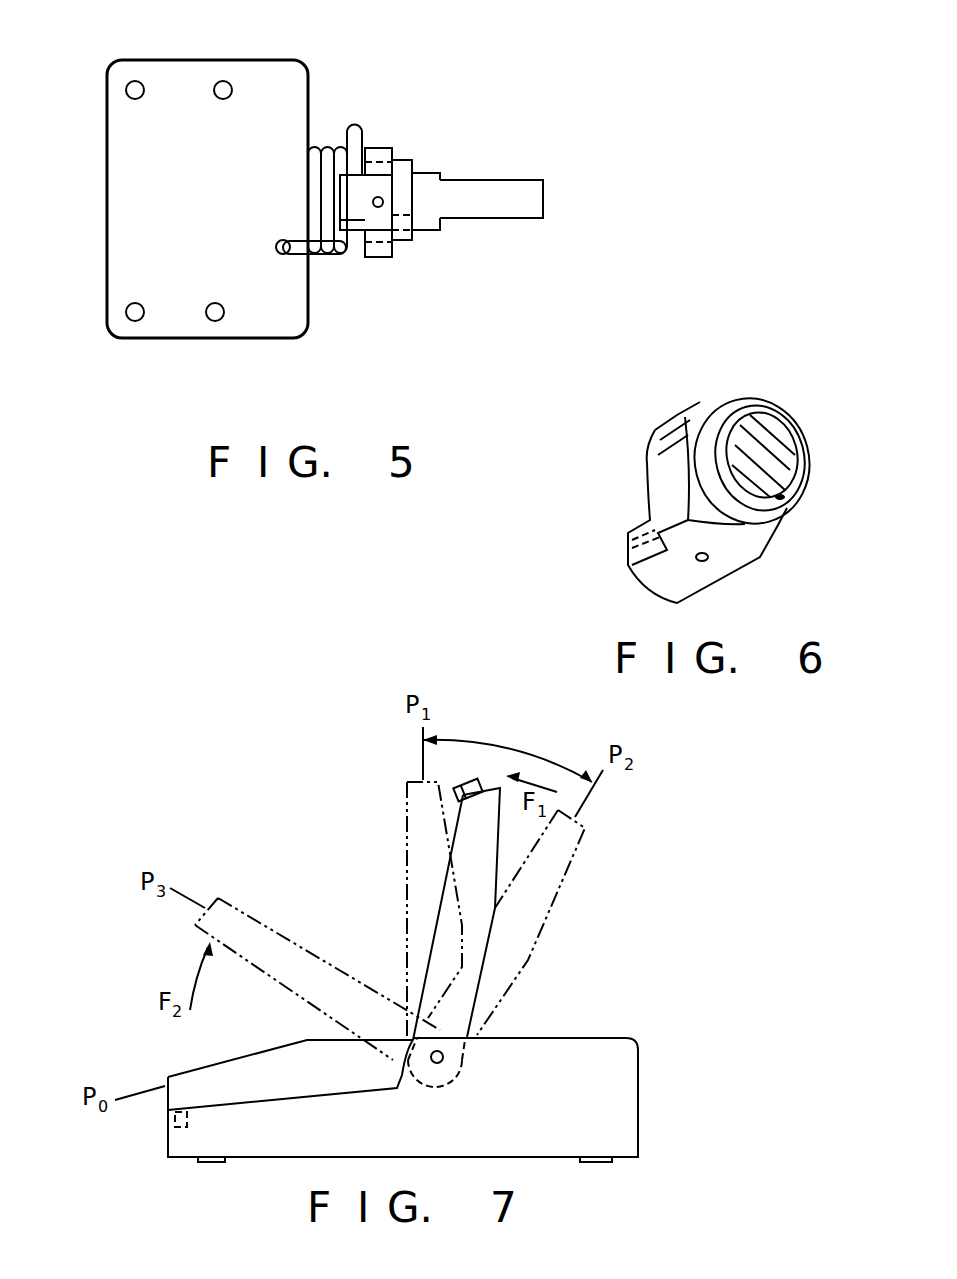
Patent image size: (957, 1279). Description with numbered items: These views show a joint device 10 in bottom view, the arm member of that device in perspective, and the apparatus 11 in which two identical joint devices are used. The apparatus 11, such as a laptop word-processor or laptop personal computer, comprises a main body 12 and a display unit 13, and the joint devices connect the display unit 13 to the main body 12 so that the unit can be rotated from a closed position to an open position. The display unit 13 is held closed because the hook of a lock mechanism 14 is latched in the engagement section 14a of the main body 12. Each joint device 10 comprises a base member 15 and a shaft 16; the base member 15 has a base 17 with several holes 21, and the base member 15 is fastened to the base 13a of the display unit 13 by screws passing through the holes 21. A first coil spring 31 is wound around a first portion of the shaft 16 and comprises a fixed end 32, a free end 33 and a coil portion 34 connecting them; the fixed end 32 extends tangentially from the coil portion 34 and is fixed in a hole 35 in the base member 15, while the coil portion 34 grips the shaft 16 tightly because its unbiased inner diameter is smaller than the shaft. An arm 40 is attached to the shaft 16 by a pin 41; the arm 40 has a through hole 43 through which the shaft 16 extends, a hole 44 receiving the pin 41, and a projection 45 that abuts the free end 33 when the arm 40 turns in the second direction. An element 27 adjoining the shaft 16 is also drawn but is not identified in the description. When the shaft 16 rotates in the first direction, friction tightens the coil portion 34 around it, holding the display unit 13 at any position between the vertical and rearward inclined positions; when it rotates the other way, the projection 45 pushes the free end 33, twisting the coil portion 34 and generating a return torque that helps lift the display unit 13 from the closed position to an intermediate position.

In FIG. 5, the joint device 10 is at (438, 77).
In FIG. 7, the joint device 10 is at (445, 1064).
In FIG. 7, the apparatus 11 is at (645, 1008).
In FIG. 7, the main body 12 is at (535, 1038).
In FIG. 7, the display unit 13 is at (448, 875).
In FIG. 7, the base 13a is at (432, 1087).
In FIG. 7, the lock mechanism 14 is at (450, 787).
In FIG. 7, the engagement section 14a is at (172, 1120).
In FIG. 5, the base member 15 is at (107, 205).
In FIG. 5, the shaft 16 is at (424, 222).
In FIG. 7, the shaft 16 is at (413, 1072).
In FIG. 5, the base 17 is at (262, 312).
In FIG. 5, the holes 21 is at (133, 82).
In FIG. 5, the arm 27 is at (520, 181).
In FIG. 5, the first coil spring 31 is at (327, 133).
In FIG. 5, the fixed end 32 is at (281, 241).
In FIG. 5, the free end 33 is at (357, 126).
In FIG. 5, the coil portion 34 is at (326, 262).
In FIG. 5, the hole 35 is at (287, 258).
In FIG. 5, the arm 40 is at (399, 257).
In FIG. 6, the arm 40 is at (779, 397).
In FIG. 5, the pin 41 is at (384, 202).
In FIG. 6, the through hole 43 is at (787, 500).
In FIG. 6, the hole 44 is at (705, 562).
In FIG. 5, the projection 45 is at (362, 188).
In FIG. 6, the projection 45 is at (628, 540).